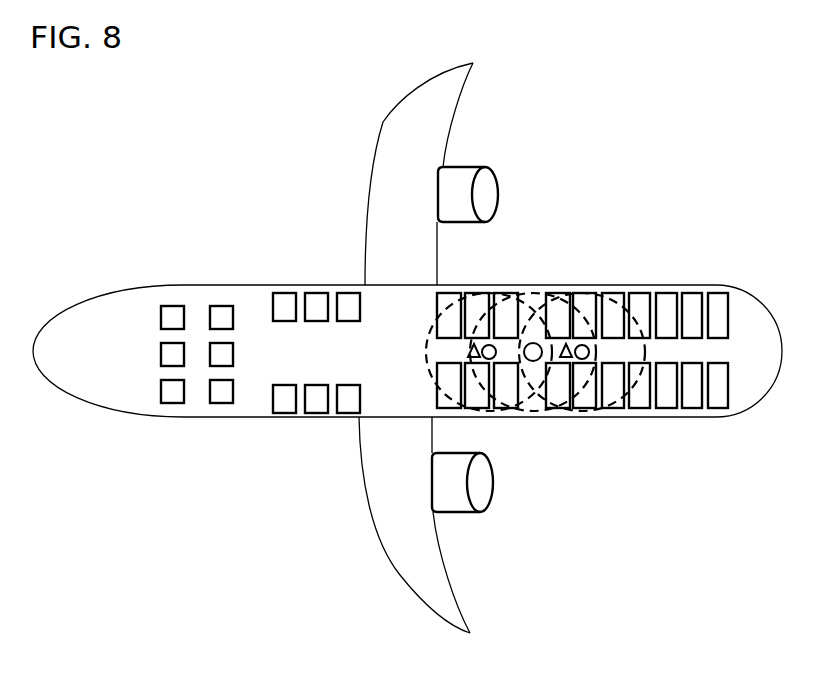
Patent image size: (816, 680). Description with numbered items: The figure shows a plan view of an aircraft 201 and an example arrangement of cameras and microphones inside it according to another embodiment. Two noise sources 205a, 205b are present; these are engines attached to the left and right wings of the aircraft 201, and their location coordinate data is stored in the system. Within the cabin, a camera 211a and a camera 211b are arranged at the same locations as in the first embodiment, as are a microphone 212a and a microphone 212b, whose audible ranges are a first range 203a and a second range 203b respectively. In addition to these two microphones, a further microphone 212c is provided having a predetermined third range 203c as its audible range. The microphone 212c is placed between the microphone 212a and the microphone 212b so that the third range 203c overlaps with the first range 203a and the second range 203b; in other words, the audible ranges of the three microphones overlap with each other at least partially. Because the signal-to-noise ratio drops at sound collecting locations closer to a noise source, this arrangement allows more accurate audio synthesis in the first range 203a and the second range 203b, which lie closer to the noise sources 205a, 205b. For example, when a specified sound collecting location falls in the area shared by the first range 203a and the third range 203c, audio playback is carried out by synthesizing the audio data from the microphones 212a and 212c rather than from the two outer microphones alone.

The aircraft 201 is at (115, 292).
The first range 203a is at (490, 415).
The second range 203b is at (653, 407).
The third range 203c is at (593, 413).
The noise source 205a is at (497, 176).
The noise source 205b is at (493, 492).
The camera 211a is at (474, 356).
The camera 211b is at (562, 343).
The microphone 212a is at (484, 347).
The microphone 212b is at (584, 342).
The microphone 212c is at (528, 346).